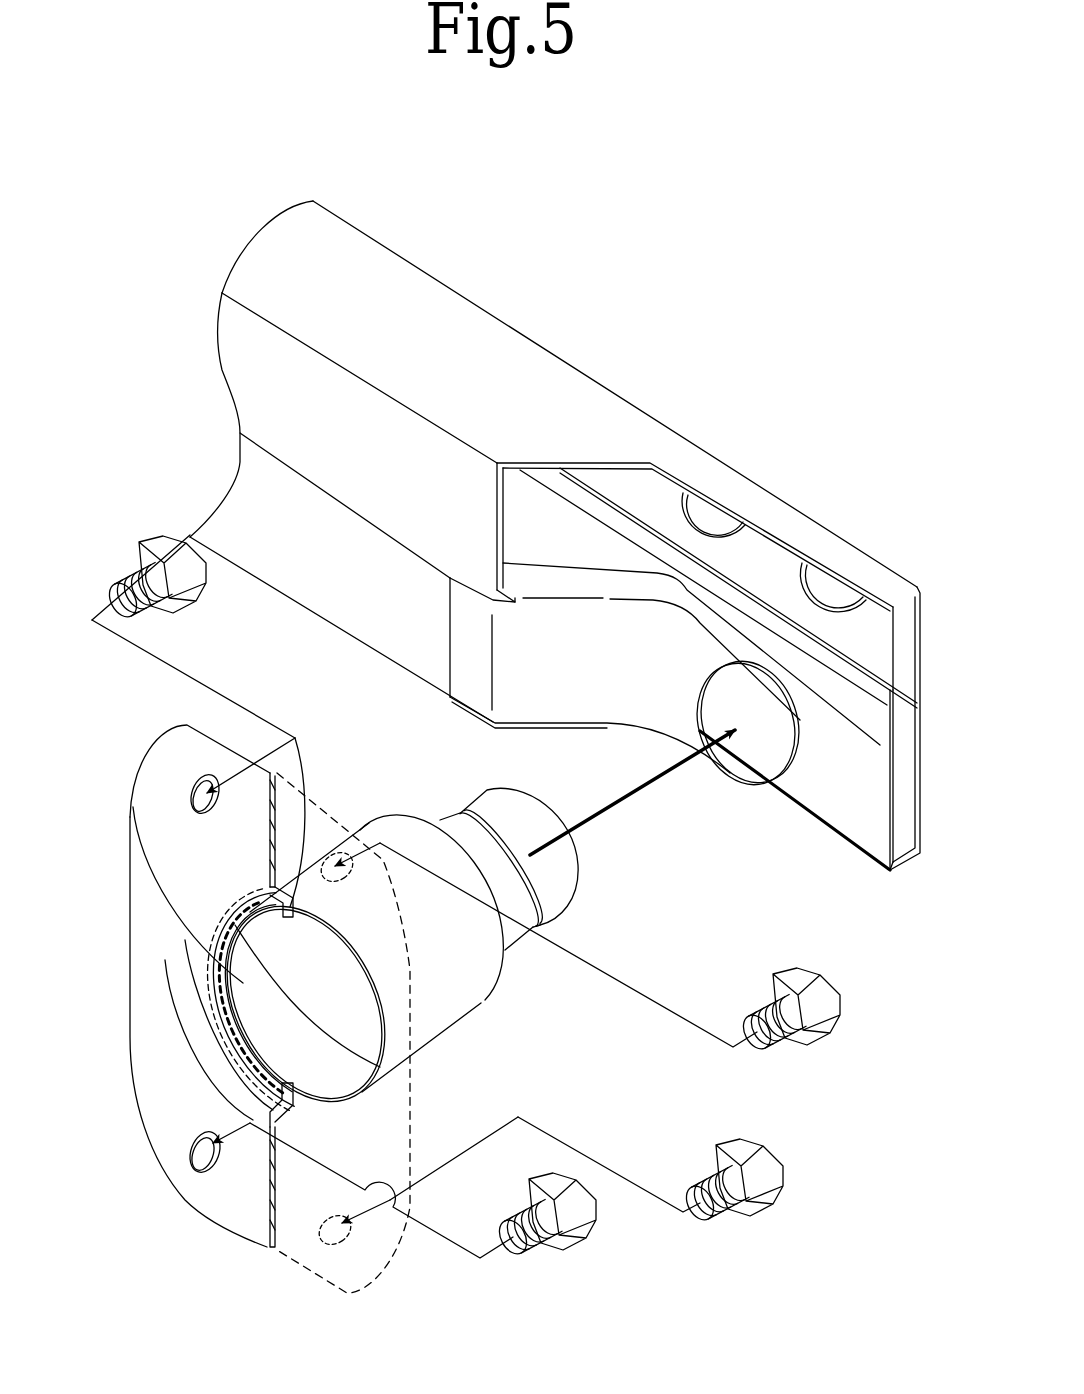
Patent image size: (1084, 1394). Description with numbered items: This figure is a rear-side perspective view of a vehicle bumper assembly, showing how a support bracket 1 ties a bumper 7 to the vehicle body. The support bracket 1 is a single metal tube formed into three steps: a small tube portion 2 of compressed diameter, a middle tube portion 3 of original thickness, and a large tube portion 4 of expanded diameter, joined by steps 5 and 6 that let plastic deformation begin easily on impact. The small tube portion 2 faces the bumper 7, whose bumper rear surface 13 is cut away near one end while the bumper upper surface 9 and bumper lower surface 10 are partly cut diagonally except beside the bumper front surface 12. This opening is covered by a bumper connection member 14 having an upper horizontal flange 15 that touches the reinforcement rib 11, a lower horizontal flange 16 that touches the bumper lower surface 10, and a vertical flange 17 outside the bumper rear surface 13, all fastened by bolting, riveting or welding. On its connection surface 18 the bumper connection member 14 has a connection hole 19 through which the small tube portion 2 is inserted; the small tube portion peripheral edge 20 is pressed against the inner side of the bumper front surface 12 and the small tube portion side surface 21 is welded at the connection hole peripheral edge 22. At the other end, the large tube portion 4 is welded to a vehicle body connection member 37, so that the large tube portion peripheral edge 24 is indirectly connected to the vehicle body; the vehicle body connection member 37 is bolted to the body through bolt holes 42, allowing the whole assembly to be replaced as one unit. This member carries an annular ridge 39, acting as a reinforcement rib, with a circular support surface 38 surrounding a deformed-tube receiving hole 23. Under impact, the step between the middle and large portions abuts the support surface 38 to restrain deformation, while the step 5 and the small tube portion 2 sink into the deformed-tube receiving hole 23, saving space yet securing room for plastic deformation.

The support bracket 1 is at (460, 997).
The small tube portion 2 is at (553, 888).
The middle tube portion 3 is at (473, 982).
The large tube portion 4 is at (405, 1045).
The step 5 is at (430, 823).
The step 6 is at (367, 833).
The bumper 7 is at (445, 350).
The bumper upper surface 9 is at (375, 300).
The bumper lower surface 10 is at (893, 865).
The reinforcement rib 11 is at (560, 540).
The bumper front surface 12 is at (903, 777).
The bumper rear surface 13 is at (312, 575).
The bumper connection member 14 is at (668, 650).
The upper horizontal flange 15 is at (760, 648).
The lower horizontal flange 16 is at (905, 875).
The vertical flange 17 is at (458, 647).
The connection surface 18 is at (820, 790).
The connection hole 19 is at (755, 725).
The small tube portion peripheral edge 20 is at (590, 868).
The small tube portion side surface 21 is at (543, 923).
The connection hole peripheral edge 22 is at (703, 695).
The deformed-tube receiving hole 23 is at (130, 815).
The large tube portion peripheral edge 24 is at (313, 1180).
The vehicle body connection member 37 is at (188, 1188).
The support surface 38 is at (297, 737).
The annular ridge 39 is at (253, 897).
The bolt holes 42 is at (195, 790).